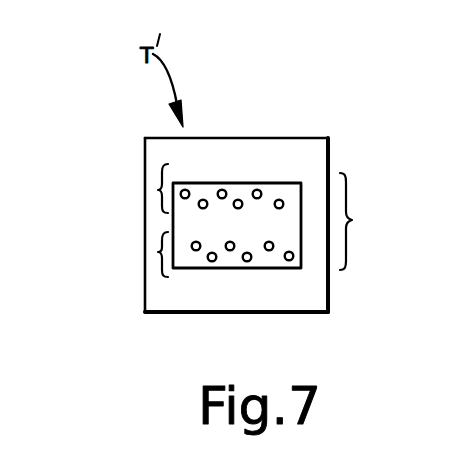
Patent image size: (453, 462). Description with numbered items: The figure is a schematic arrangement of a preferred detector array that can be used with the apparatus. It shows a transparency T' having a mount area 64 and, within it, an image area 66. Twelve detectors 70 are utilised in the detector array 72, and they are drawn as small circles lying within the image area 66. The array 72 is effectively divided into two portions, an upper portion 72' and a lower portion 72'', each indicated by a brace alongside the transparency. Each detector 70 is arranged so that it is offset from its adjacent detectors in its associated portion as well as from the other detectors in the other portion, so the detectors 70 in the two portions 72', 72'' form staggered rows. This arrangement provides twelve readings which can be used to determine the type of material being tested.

The mount area 64 is at (263, 152).
The image area 66 is at (183, 221).
The detectors 70 is at (259, 190).
The detector array 72 is at (378, 221).
The first portion of detector array 72' is at (101, 172).
The second portion of detector array 72'' is at (113, 278).